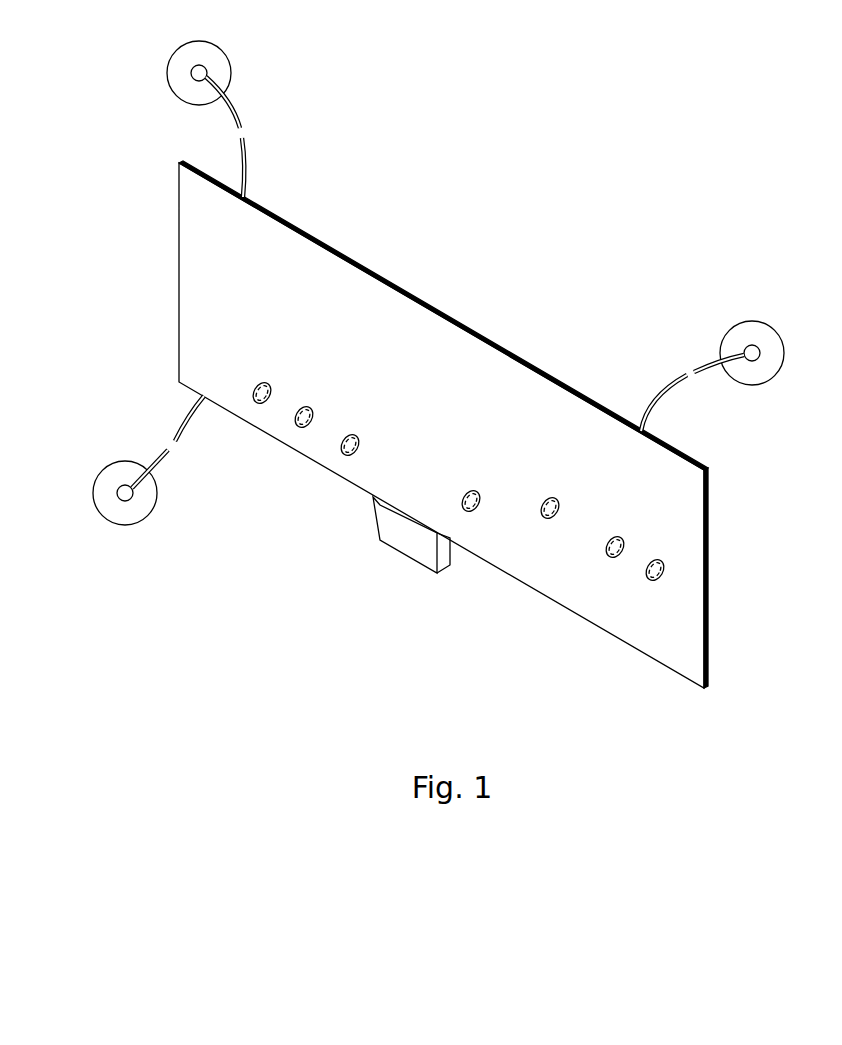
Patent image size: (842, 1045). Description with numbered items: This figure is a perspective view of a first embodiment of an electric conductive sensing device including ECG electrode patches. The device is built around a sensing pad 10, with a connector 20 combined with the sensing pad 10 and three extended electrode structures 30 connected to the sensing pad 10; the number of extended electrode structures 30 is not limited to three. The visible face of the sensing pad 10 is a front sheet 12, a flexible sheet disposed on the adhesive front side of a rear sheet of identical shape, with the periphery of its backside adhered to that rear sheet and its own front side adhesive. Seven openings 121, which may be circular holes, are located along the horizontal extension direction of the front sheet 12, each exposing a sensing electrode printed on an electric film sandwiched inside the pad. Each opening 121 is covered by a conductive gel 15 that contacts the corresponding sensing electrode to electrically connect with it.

The sensing pad 10 is at (502, 447).
The front sheet 12 is at (643, 648).
The conductive gel 15 is at (477, 513).
The opening 121 is at (482, 512).
The connector 20 is at (388, 575).
The extended electrode structure 30 is at (260, 113).